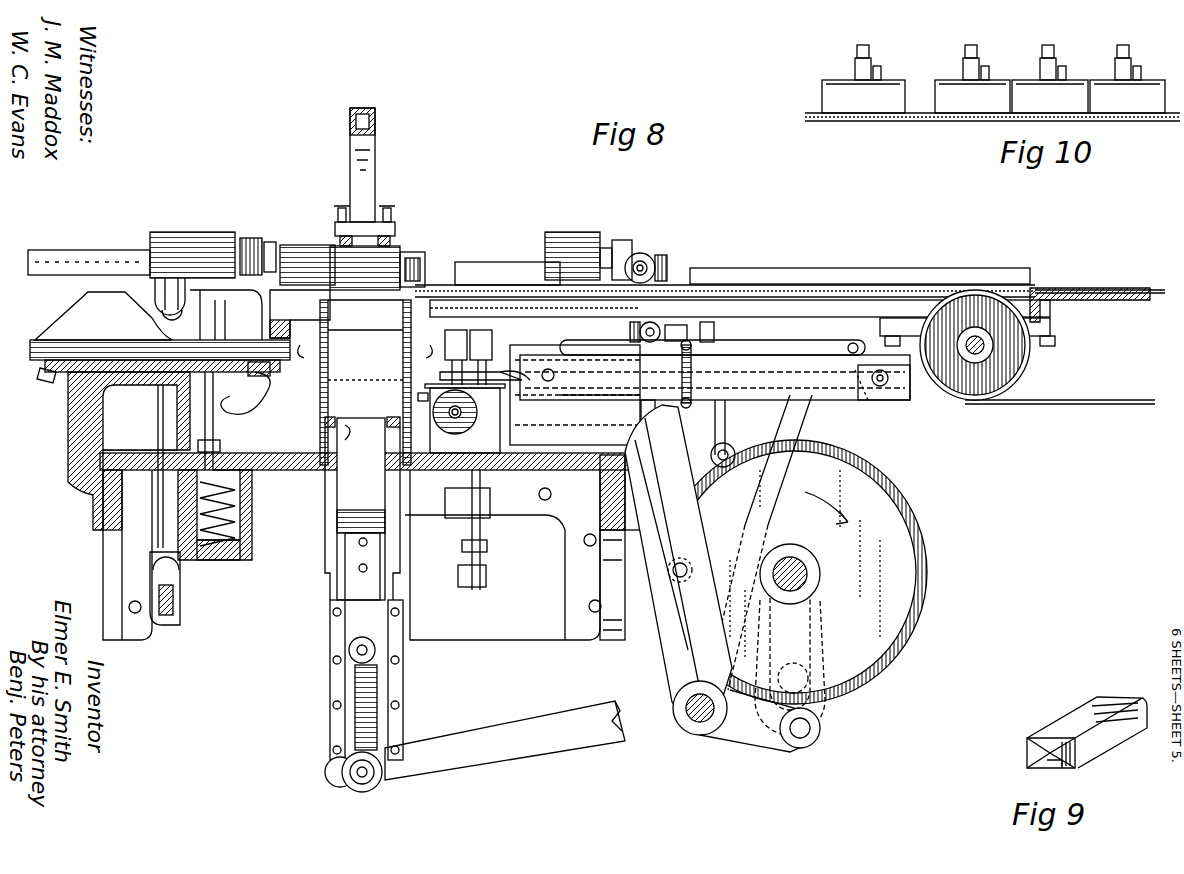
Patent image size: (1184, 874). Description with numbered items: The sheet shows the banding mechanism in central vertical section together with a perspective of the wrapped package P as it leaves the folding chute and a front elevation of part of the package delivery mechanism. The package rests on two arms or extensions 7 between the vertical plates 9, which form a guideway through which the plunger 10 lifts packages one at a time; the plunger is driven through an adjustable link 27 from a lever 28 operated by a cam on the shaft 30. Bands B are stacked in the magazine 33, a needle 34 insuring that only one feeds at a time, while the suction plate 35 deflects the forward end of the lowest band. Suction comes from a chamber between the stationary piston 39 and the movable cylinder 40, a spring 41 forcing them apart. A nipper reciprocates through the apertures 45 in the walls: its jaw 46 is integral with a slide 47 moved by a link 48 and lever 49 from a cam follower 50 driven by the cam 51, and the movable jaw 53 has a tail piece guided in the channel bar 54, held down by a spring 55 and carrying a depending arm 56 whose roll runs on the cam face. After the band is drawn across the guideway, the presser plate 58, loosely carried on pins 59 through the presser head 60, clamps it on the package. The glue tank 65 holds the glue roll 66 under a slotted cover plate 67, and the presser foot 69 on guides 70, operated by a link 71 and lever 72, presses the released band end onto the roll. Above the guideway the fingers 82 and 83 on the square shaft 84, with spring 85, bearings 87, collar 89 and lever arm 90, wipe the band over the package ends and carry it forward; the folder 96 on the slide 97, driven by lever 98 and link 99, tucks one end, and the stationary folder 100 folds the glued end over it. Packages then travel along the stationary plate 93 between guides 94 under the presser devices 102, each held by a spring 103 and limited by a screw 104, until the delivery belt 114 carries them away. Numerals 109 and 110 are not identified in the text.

In FIG. 8, the bar 109 is at (158, 250).
In FIG. 8, the horizontal bearings 87 is at (192, 246).
In FIG. 8, the spring 85 is at (258, 240).
In FIG. 8, the finger 83 is at (302, 245).
In FIG. 8, the presser head 60 is at (372, 156).
In FIG. 8, the pins 59 is at (385, 208).
In FIG. 8, the presser plate 58 is at (396, 236).
In FIG. 8, the stationary folder 100 is at (368, 291).
In FIG. 8, the finger 82 is at (425, 262).
In FIG. 8, the square shaft 84 is at (496, 262).
In FIG. 8, the collar 89 is at (640, 252).
In FIG. 8, the stationary plate 93 is at (760, 284).
In FIG. 10, the stationary plate 93 is at (925, 121).
In FIG. 8, the guides 94 is at (800, 268).
In FIG. 8, the slide 97 is at (740, 308).
In FIG. 8, the delivery belt 114 is at (1097, 292).
In FIG. 8, the folder 96 is at (300, 314).
In FIG. 8, the magazine 33 is at (72, 318).
In FIG. 8, the bands B is at (40, 346).
In FIG. 8, the needle 34 is at (42, 381).
In FIG. 8, the rods 110 is at (158, 402).
In FIG. 8, the suction plate 35 is at (258, 385).
In FIG. 8, the vertical plates 9 is at (411, 342).
In FIG. 8, the package P is at (355, 396).
In FIG. 9, the package P is at (1088, 710).
In FIG. 8, the apertures 45 is at (400, 357).
In FIG. 8, the presser foot 69 is at (470, 341).
In FIG. 8, the movable jaw 53 is at (492, 372).
In FIG. 8, the glue tank 65 is at (497, 442).
In FIG. 8, the glue roll 66 is at (455, 410).
In FIG. 8, the cover plate 67 is at (417, 401).
In FIG. 8, the jaw 46 is at (575, 395).
In FIG. 8, the channel bar 54 is at (828, 342).
In FIG. 8, the slide 47 is at (902, 386).
In FIG. 8, the link 48 is at (861, 393).
In FIG. 8, the lever arm 90 is at (652, 324).
In FIG. 8, the link 99 is at (693, 327).
In FIG. 8, the spring 55 is at (690, 405).
In FIG. 8, the arm 56 is at (727, 418).
In FIG. 8, the movable cylinder 40 is at (242, 560).
In FIG. 8, the stationary piston 39 is at (252, 522).
In FIG. 8, the spring 41 is at (184, 558).
In FIG. 8, the arms or extensions 7 is at (382, 424).
In FIG. 8, the plunger 10 is at (350, 512).
In FIG. 8, the adjustable link 27 is at (360, 710).
In FIG. 8, the lever 28 is at (520, 750).
In FIG. 8, the guides 70 is at (486, 492).
In FIG. 8, the link 71 is at (488, 548).
In FIG. 8, the lever 72 is at (464, 583).
In FIG. 8, the cam 51 is at (875, 650).
In FIG. 8, the shaft 30 is at (798, 558).
In FIG. 8, the lever 49 is at (794, 428).
In FIG. 8, the lever 98 is at (668, 608).
In FIG. 8, the cam follower 50 is at (818, 710).
In FIG. 10, the presser devices 102 is at (840, 80).
In FIG. 10, the bolt or screw 104 is at (970, 45).
In FIG. 10, the spring 103 is at (884, 72).